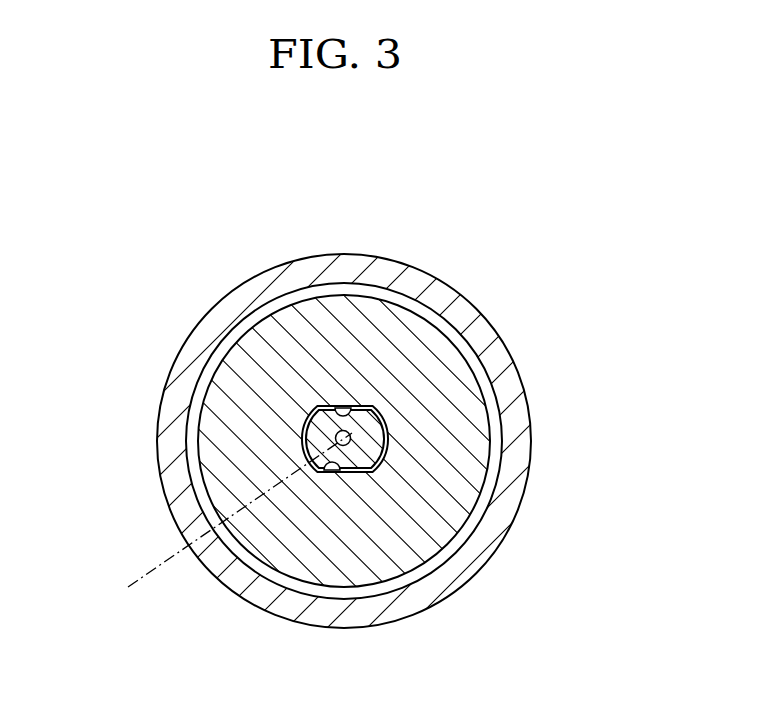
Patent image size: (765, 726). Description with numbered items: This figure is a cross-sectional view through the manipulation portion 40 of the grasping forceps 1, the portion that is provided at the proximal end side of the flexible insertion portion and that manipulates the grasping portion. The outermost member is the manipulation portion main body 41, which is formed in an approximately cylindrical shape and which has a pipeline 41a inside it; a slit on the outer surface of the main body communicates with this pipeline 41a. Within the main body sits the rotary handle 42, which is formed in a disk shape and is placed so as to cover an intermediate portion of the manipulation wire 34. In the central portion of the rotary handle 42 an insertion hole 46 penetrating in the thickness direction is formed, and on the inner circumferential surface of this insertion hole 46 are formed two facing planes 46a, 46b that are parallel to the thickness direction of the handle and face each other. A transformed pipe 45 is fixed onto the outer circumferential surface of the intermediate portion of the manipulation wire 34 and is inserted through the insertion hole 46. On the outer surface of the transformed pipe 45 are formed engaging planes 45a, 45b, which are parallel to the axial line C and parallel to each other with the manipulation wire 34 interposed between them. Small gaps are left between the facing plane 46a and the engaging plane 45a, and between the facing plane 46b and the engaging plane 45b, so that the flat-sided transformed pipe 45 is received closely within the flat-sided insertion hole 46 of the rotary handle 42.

The grasping forceps 1 is at (126, 249).
The manipulation wire 34 is at (344, 439).
The manipulation portion 40 is at (547, 284).
The manipulation portion main body 41 is at (430, 270).
The pipeline 41a is at (308, 303).
The rotary handle 42 is at (441, 340).
The transformed pipe 45 is at (389, 436).
The engaging plane 45a is at (352, 411).
The engaging plane 45b is at (356, 473).
The insertion hole 46 is at (306, 401).
The facing plane 46a is at (337, 406).
The facing plane 46b is at (331, 470).
The axial line C is at (229, 521).